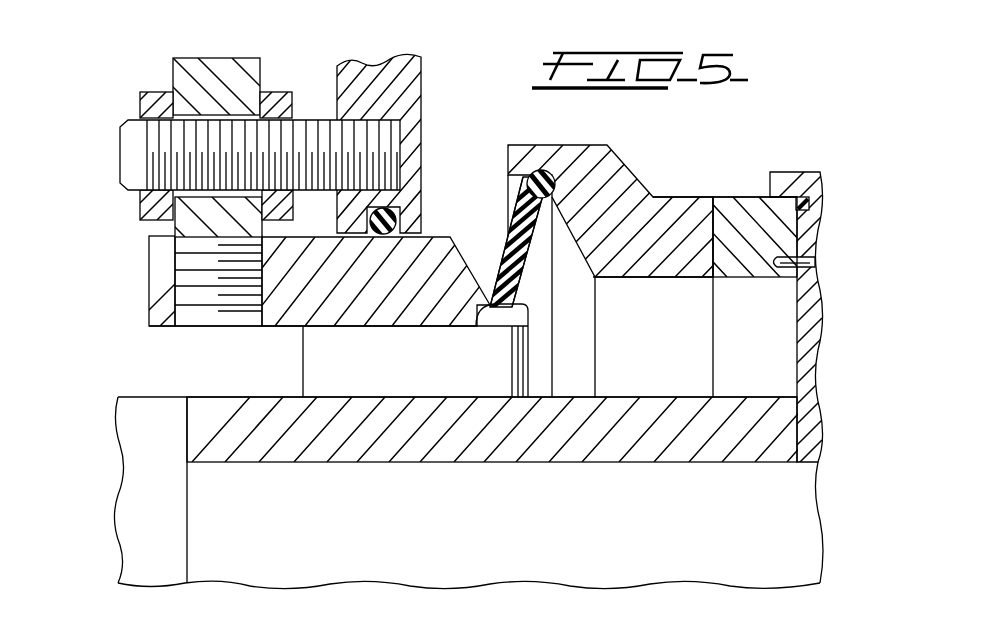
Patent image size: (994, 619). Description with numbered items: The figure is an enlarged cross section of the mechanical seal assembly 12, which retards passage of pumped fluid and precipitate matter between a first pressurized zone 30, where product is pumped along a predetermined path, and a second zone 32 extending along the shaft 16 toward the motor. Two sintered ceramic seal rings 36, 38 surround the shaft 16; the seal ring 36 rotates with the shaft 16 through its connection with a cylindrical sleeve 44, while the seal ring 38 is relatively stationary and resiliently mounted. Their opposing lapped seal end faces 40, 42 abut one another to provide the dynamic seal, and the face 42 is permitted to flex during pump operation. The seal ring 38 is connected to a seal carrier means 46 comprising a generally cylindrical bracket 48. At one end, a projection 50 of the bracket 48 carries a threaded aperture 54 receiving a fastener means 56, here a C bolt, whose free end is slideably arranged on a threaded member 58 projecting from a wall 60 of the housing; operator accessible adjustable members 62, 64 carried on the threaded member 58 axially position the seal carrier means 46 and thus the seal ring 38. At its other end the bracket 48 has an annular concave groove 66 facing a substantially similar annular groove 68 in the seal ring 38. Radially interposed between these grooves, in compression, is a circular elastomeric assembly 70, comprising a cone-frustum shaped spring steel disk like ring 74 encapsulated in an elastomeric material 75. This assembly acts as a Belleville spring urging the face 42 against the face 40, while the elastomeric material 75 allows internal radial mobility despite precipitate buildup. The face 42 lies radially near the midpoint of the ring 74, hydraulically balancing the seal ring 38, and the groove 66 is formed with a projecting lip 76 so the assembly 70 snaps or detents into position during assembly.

The mechanical seal assembly 12 is at (708, 187).
The shaft 16 is at (163, 521).
The first pressurized zone 30 is at (503, 126).
The second zone 32 is at (690, 378).
The seal ring 36 is at (750, 265).
The seal ring 38 is at (622, 257).
The seal end face 40 is at (712, 248).
The seal end face 42 is at (715, 210).
The cylindrical sleeve 44 is at (825, 285).
The seal carrier means 46 is at (118, 238).
The cylindrical bracket 48 is at (385, 306).
The projection 50 is at (150, 306).
The threaded aperture 54 is at (176, 310).
The fastener means 56 is at (219, 58).
The threaded member 58 is at (128, 147).
The wall 60 is at (418, 68).
The adjustable member 62 is at (152, 92).
The adjustable member 64 is at (278, 94).
The annular concave groove 66 is at (484, 312).
The annular groove 68 is at (542, 170).
The circular elastomeric assembly 70 is at (498, 226).
The disk like ring 74 is at (555, 196).
The elastomeric material 75 is at (533, 273).
The projecting lip 76 is at (521, 318).